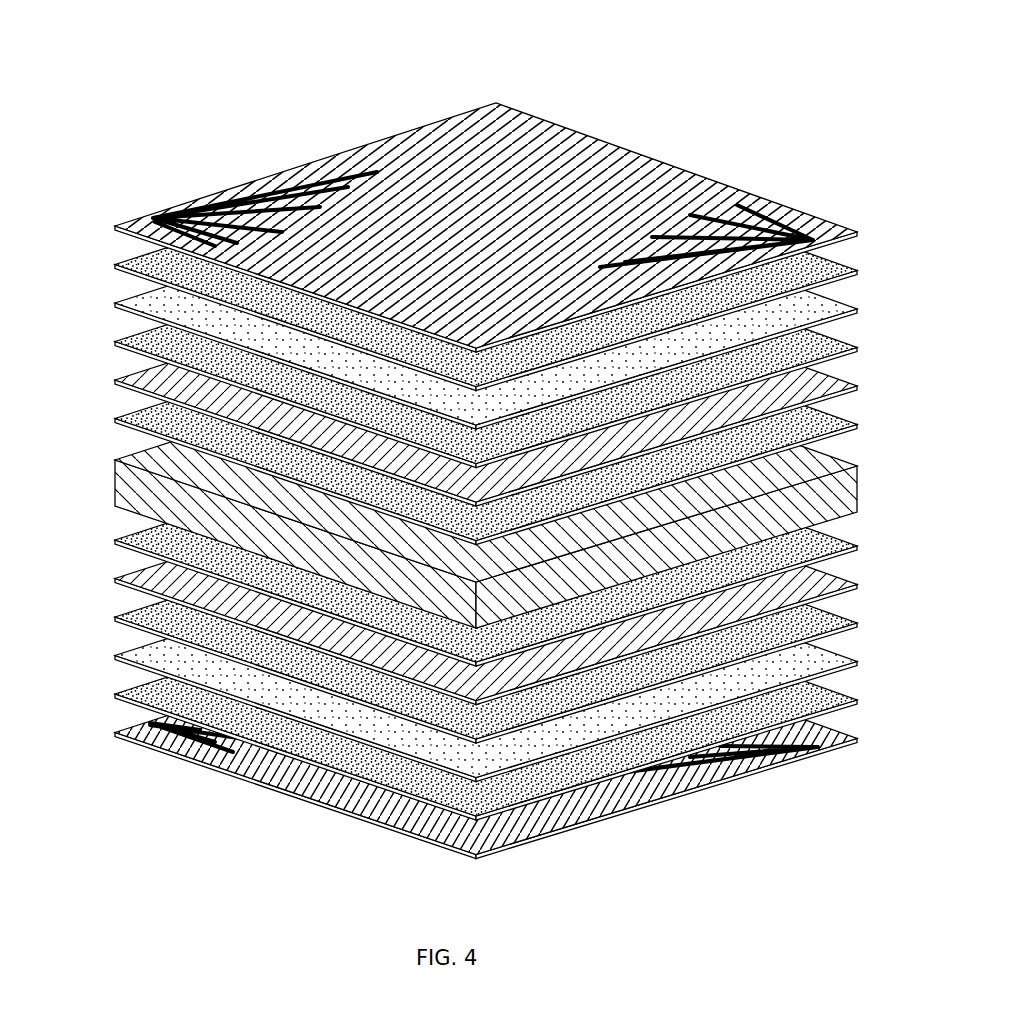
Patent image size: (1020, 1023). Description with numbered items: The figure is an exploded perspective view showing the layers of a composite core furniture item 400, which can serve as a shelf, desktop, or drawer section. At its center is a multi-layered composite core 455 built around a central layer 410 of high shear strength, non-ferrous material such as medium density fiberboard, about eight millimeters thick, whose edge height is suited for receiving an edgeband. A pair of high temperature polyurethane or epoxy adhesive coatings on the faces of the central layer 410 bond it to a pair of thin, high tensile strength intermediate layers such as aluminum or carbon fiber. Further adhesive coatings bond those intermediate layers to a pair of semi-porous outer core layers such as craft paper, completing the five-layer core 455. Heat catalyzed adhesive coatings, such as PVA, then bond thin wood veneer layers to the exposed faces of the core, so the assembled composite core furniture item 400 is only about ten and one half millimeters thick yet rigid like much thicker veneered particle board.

The composite core furniture item 400 is at (141, 61).
The layer 410 is at (115, 505).
The multi-layered composite core 455 is at (103, 685).